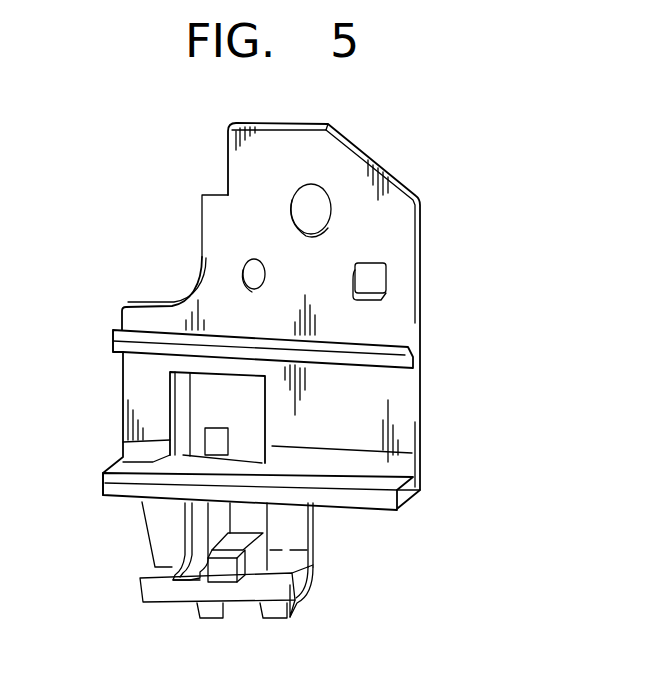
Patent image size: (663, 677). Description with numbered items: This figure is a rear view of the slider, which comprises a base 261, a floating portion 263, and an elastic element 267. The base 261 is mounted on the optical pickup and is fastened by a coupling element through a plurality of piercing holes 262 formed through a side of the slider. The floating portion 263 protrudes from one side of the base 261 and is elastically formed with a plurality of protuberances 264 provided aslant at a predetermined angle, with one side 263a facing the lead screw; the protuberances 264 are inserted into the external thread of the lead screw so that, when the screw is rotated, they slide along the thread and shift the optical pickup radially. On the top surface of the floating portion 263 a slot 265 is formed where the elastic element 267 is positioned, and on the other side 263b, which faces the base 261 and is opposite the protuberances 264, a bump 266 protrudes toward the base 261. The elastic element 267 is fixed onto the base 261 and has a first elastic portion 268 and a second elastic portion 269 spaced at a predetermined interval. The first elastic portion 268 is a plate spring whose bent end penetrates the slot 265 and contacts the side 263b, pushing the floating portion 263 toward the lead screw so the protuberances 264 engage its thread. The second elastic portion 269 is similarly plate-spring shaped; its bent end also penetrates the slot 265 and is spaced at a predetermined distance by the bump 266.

The base 261 is at (403, 303).
The piercing holes 262 is at (317, 198).
The floating portion 263 is at (382, 574).
The one side 263a is at (320, 580).
The other side 263b is at (313, 560).
The protuberances 264 is at (205, 610).
The slot 265 is at (218, 516).
The bump 266 is at (223, 575).
The elastic element 267 is at (203, 392).
The first elastic portion 268 is at (200, 530).
The second elastic portion 269 is at (250, 520).